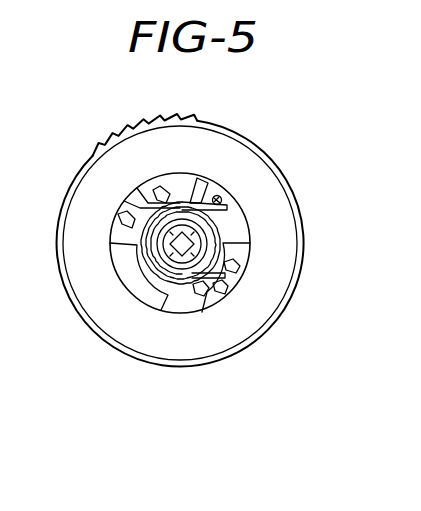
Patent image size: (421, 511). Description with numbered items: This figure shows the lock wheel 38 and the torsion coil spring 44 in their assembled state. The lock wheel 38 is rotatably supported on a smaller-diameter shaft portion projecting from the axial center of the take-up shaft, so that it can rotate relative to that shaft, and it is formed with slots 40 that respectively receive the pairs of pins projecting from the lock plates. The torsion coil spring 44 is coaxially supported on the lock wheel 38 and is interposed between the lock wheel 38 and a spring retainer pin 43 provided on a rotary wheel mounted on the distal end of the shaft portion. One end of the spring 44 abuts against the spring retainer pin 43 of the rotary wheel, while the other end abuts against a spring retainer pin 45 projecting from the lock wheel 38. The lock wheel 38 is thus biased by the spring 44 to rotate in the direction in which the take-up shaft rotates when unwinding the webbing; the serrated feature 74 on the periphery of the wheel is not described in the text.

The lock wheel 38 is at (268, 172).
The serrations 74 is at (129, 137).
The slots 40 is at (164, 190).
The spring retainer pin 43 is at (221, 198).
The torsion coil spring 44 is at (206, 200).
The spring retainer pin 45 is at (229, 285).